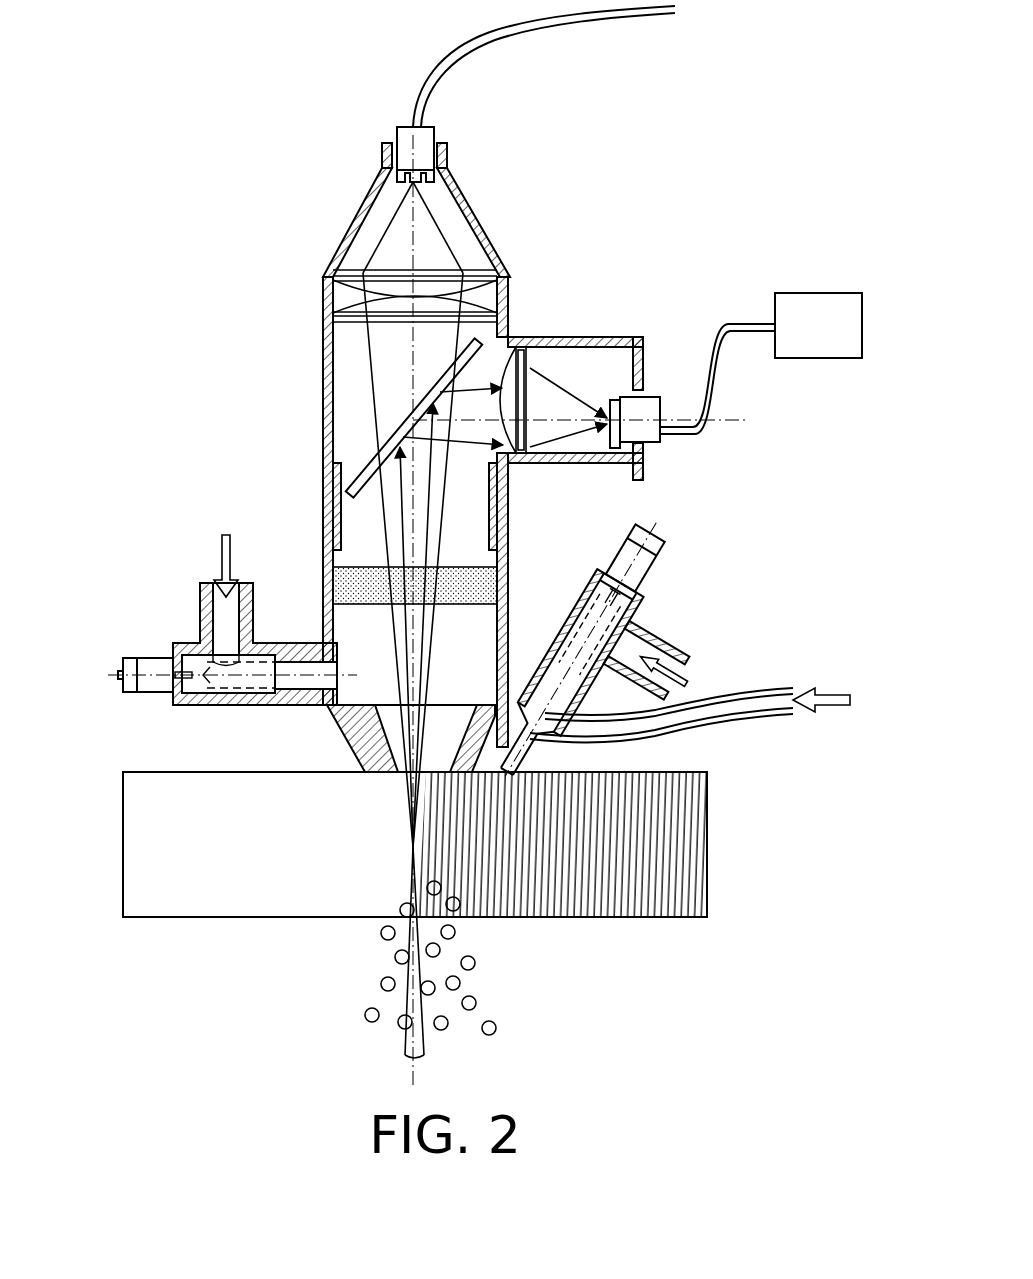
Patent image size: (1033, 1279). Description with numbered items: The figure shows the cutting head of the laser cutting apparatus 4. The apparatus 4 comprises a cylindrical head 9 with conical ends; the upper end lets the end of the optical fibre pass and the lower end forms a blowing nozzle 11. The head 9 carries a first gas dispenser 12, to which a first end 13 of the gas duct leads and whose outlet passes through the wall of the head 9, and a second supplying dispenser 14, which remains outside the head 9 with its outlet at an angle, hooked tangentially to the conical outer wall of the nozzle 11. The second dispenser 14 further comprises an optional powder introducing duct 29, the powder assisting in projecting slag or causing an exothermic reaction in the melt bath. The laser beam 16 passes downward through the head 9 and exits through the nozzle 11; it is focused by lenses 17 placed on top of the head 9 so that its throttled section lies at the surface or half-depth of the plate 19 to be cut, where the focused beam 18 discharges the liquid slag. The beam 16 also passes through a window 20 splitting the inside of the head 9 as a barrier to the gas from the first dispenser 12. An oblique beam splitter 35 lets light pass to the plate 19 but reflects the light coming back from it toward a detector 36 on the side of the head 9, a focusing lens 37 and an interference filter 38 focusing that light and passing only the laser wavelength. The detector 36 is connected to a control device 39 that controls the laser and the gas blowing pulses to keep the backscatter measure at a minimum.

The cutting apparatus 4 is at (258, 212).
The head 9 is at (508, 289).
The blowing nozzle 11 is at (350, 735).
The first gas dispenser 12 is at (150, 712).
The first end of the gas duct 13 is at (186, 565).
The second supplying dispenser 14 is at (552, 600).
The laser beam 16 is at (383, 368).
The lenses 17 is at (430, 272).
The laser beam 18 is at (410, 855).
The plate 19 is at (123, 890).
The window 20 is at (330, 576).
The powder introducing duct 29 is at (745, 700).
The beam splitter 35 is at (400, 450).
The detector 36 is at (645, 415).
The focusing lens 37 is at (525, 370).
The interference filter 38 is at (612, 440).
The control device 39 is at (812, 312).